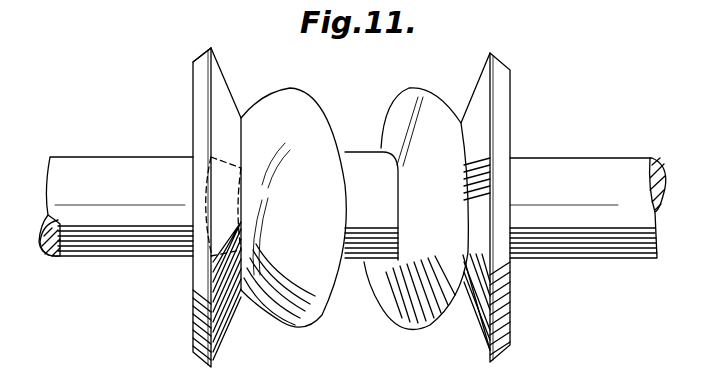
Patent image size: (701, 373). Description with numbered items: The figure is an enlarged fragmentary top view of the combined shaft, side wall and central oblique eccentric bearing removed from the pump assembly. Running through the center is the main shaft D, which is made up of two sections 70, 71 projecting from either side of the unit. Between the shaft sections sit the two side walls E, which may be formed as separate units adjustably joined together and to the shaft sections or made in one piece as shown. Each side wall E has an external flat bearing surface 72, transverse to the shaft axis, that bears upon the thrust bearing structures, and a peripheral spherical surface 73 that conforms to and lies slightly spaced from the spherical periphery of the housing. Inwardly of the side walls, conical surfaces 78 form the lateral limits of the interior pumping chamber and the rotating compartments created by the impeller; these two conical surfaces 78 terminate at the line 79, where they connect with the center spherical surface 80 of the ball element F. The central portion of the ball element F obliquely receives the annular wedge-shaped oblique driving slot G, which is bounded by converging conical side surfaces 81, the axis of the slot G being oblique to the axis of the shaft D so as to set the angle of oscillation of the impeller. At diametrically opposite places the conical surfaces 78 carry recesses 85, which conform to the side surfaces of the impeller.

The section of the main shaft 70 is at (163, 248).
The section of the main shaft 71 is at (608, 172).
The external flat bearing surface 72 is at (193, 110).
The peripheral spherical surface 73 is at (206, 56).
The conical surface 78 is at (219, 61).
The line 79 is at (462, 118).
The center spherical surface 80 is at (285, 327).
The converging conical side surface 81 is at (400, 303).
The recess 85 is at (495, 180).
The main shaft D is at (112, 243).
The side wall E is at (225, 338).
The ball element F is at (272, 100).
The oblique driving slot G is at (362, 129).